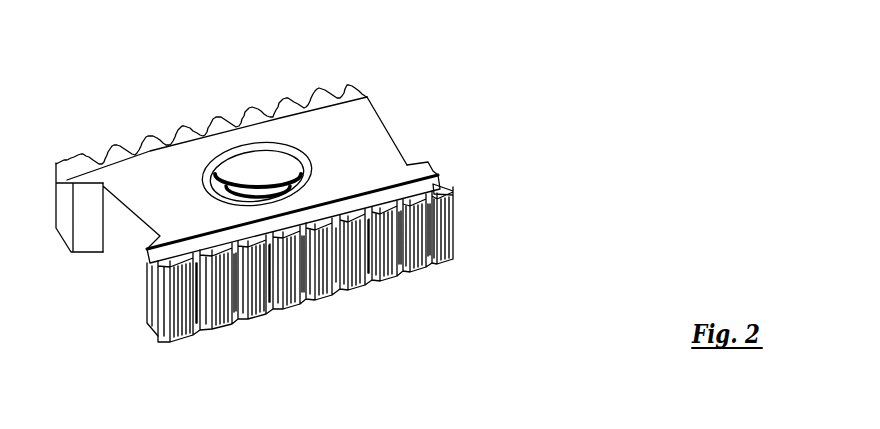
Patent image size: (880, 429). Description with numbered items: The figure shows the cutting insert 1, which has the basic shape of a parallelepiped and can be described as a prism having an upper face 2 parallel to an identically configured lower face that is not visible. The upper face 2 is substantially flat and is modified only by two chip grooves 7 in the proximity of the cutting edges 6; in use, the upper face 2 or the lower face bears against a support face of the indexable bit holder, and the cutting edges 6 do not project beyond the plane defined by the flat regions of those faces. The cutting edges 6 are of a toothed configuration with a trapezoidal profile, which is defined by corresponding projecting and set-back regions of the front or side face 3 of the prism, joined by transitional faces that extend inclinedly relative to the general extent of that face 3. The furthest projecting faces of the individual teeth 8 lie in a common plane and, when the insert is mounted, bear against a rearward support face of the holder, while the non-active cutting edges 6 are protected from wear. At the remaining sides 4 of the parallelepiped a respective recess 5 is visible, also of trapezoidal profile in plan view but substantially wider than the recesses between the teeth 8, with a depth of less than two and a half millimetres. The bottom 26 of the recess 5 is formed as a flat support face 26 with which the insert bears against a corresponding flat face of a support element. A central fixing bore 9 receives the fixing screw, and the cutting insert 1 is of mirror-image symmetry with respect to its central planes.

The cutting insert 1 is at (412, 308).
The upper face 2 is at (350, 147).
The side face 3 is at (452, 240).
The side face 4 is at (150, 295).
The recess 5 is at (112, 223).
The cutting edge 6 is at (243, 107).
The chip groove 7 is at (431, 168).
The tooth 8 is at (320, 283).
The fixing bore 9 is at (243, 173).
The bottom of the recess 26 is at (125, 234).